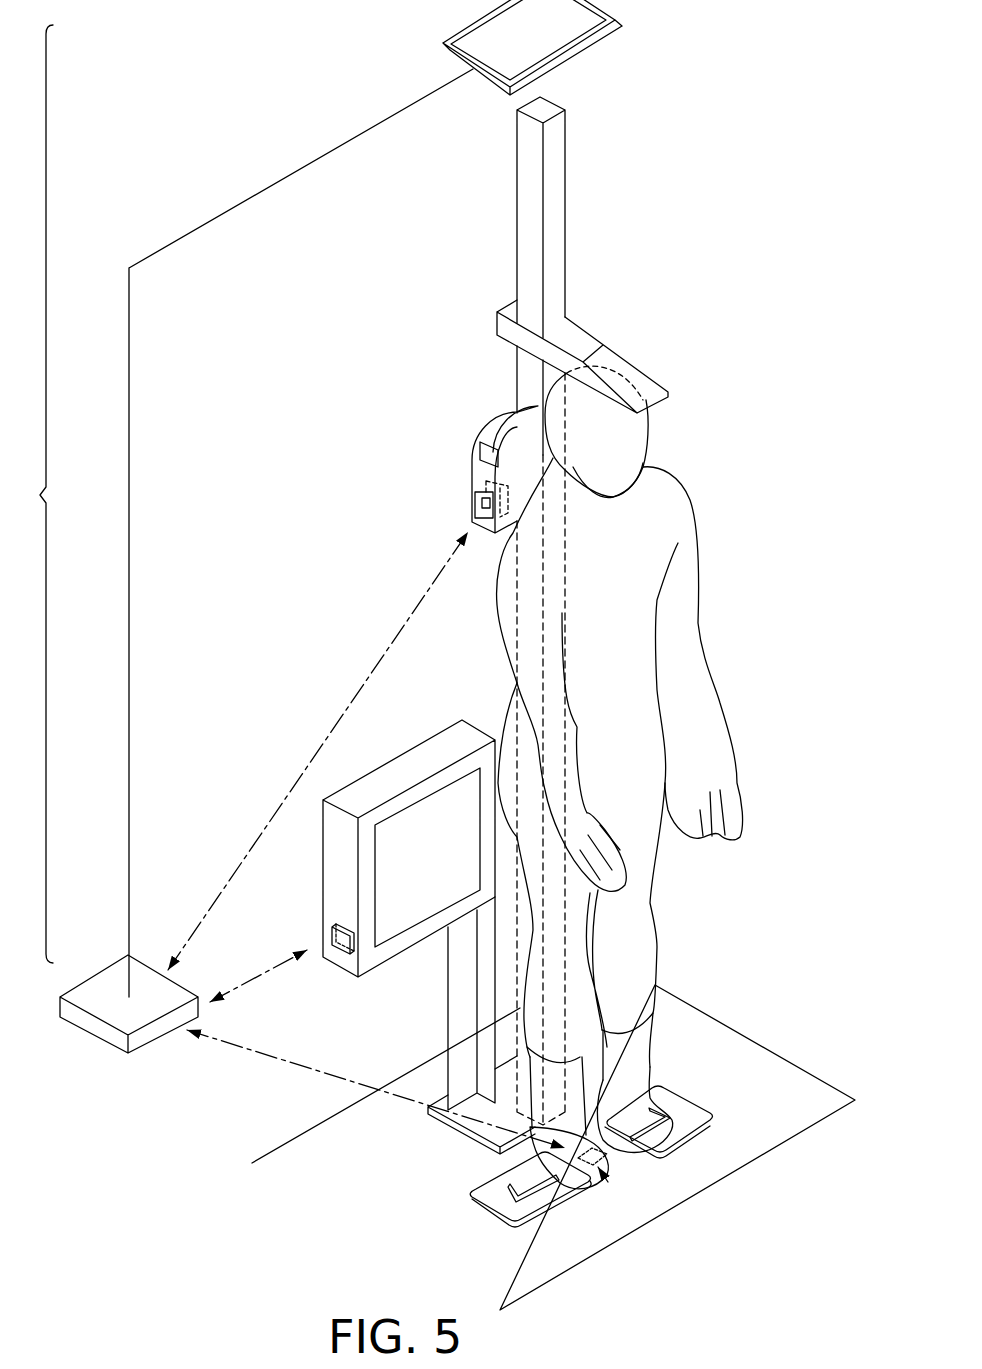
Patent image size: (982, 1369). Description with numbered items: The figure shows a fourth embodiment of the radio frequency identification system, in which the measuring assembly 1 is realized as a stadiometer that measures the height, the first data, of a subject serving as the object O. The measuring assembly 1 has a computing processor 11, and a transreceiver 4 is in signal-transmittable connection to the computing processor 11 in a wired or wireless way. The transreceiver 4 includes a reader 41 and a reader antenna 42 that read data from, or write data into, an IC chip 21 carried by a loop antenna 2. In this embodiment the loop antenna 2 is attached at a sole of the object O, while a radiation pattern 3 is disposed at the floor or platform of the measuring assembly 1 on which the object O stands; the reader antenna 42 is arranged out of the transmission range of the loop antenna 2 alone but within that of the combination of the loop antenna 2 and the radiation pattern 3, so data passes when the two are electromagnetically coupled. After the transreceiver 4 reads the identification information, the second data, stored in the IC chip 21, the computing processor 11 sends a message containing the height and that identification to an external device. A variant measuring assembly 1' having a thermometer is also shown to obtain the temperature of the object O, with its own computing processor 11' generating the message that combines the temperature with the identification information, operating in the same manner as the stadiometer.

The measuring assembly 1 is at (409, 885).
The computing processor 11 is at (373, 968).
The measuring assembly 1' is at (495, 443).
The computing processor 11' is at (460, 485).
The loop antenna 2 is at (603, 1180).
The IC chip 21 is at (600, 1147).
The radiation pattern 3 is at (643, 1140).
The transreceiver 4 is at (35, 494).
The reader 41 is at (102, 977).
The reader antenna 42 is at (477, 23).
The object O is at (678, 506).